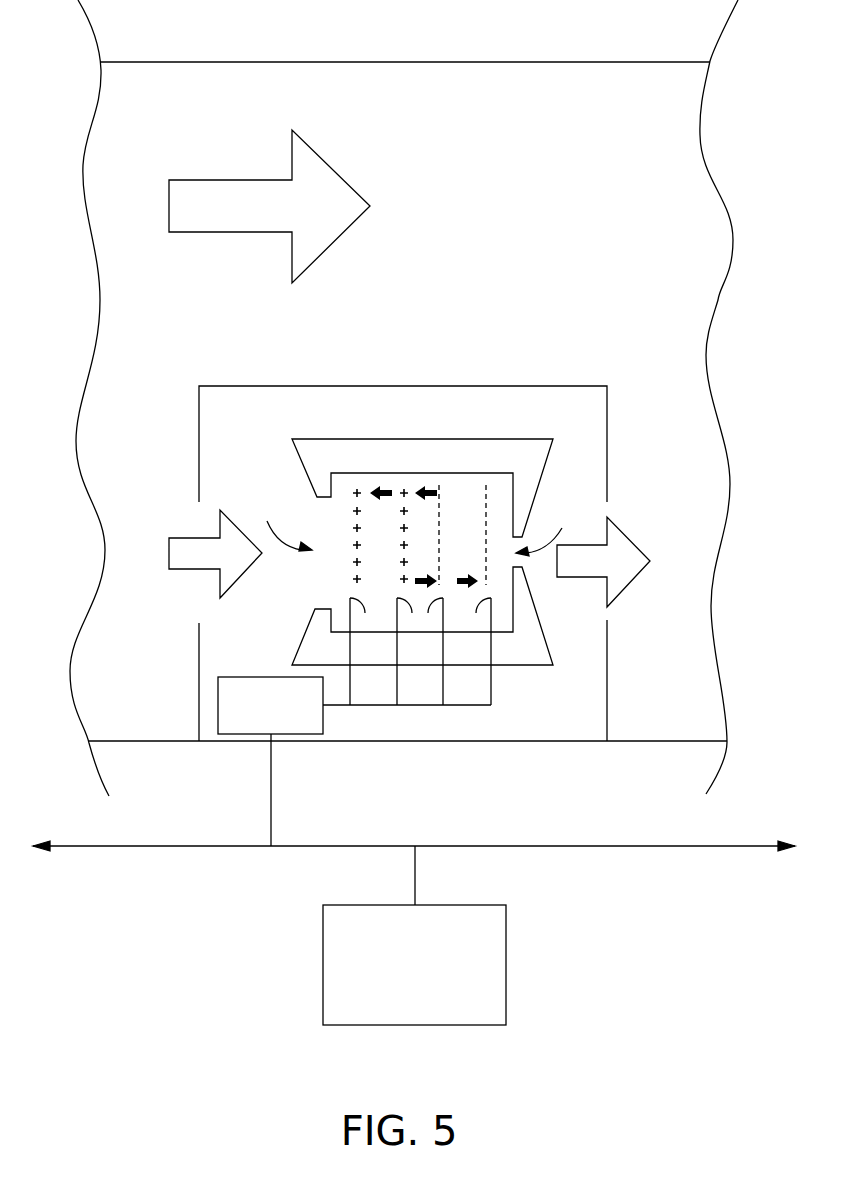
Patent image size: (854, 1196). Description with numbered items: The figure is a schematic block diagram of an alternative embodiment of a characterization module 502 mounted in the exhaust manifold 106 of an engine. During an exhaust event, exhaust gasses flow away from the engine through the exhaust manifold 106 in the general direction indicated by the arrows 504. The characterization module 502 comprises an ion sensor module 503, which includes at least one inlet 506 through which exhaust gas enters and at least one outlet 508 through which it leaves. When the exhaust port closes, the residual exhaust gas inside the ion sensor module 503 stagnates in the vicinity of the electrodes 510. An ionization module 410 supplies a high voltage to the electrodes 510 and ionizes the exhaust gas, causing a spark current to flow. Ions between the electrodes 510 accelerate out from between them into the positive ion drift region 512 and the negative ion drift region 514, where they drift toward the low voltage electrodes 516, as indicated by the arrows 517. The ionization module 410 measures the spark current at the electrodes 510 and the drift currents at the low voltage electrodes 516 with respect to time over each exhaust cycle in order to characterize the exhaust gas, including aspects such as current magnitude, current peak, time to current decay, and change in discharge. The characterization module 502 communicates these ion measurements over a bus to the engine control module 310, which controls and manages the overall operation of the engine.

The exhaust manifold 106 is at (588, 62).
The arrows 504 is at (288, 218).
The characterization module 502 is at (262, 367).
The ion sensor module 503 is at (439, 469).
The inlet 506 is at (282, 526).
The outlet 508 is at (547, 532).
The negative ion drift region 514 is at (365, 547).
The positive ion drift region 512 is at (448, 547).
The arrows 517 is at (420, 492).
The low voltage electrodes 516 is at (420, 651).
The electrodes 510 is at (407, 651).
The ionization module 410 is at (288, 728).
The engine control module 310 is at (398, 989).